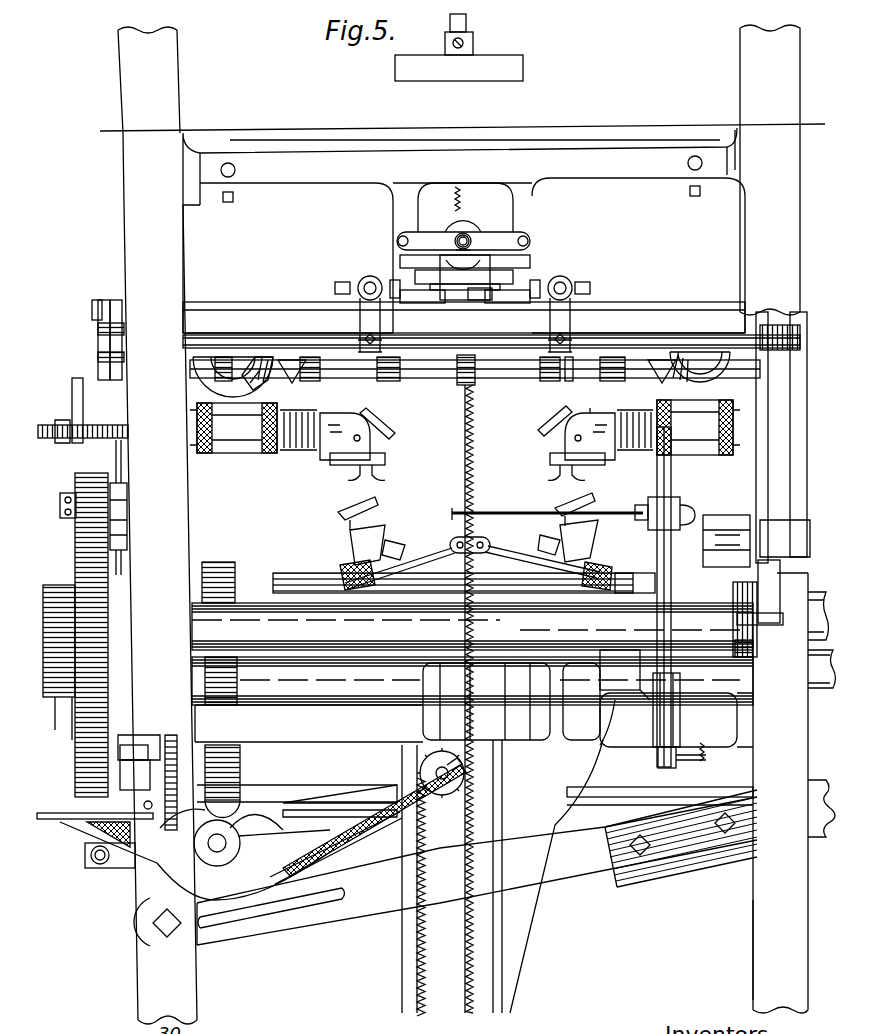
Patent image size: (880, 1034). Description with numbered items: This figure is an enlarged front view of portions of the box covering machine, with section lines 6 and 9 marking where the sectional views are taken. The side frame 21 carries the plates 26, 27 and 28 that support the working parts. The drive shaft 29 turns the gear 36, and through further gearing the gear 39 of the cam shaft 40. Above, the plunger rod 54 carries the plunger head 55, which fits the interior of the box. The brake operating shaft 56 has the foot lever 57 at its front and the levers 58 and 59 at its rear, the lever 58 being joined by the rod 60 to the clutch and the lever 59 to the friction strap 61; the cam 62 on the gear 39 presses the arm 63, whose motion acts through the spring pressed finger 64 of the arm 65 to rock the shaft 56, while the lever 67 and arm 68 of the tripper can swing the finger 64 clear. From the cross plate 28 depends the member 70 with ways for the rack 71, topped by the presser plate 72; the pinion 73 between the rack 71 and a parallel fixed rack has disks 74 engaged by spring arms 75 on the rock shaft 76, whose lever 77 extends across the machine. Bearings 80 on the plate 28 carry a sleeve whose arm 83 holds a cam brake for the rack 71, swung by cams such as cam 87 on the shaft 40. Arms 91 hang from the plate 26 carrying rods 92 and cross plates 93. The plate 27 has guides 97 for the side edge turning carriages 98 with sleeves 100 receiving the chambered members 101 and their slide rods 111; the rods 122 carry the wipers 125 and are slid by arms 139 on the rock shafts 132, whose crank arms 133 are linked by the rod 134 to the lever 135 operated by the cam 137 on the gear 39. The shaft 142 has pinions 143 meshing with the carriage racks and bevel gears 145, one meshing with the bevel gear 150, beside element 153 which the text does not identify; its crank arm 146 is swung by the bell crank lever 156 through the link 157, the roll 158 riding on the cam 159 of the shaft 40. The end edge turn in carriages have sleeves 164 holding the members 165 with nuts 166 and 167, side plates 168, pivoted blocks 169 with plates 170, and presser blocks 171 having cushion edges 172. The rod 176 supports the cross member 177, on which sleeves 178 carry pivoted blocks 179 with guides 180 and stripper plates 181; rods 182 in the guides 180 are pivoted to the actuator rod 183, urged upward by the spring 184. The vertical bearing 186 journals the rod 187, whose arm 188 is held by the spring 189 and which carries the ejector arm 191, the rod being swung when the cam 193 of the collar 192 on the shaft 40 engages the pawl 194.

The section line 6 is at (459, 126).
The section line 9 is at (455, 621).
The side frame 21 is at (753, 990).
The plate 26 is at (733, 165).
The plate 27 is at (708, 302).
The cross plate 28 is at (750, 723).
The drive shaft 29 is at (297, 710).
The gear 36 is at (237, 710).
The gear 39 is at (76, 476).
The cam shaft 40 is at (260, 605).
The plunger rod 54 is at (470, 26).
The plunger head 55 is at (497, 62).
The brake operating shaft 56 is at (214, 856).
The foot lever 57 is at (250, 862).
The lever 58 is at (235, 816).
The lever 59 is at (118, 870).
The rod 60 is at (290, 785).
The friction strap 61 is at (82, 802).
The cam 62 is at (140, 735).
The arm 63 is at (140, 780).
The spring pressed finger 64 is at (145, 796).
The arm 65 is at (160, 826).
The lever 67 is at (332, 802).
The arm 68 is at (370, 723).
The member 70 is at (528, 907).
The rack 71 is at (478, 470).
The presser plate 72 is at (525, 152).
The pinion 73 is at (498, 753).
The disks 74 is at (420, 772).
The spring arms 75 is at (358, 841).
The rock shaft 76 is at (162, 936).
The lever 77 is at (600, 862).
The bearings 80 is at (425, 715).
The arm 83 is at (440, 656).
The cam 87 is at (630, 690).
The arms 91 is at (393, 208).
The rods 92 is at (397, 246).
The cross plates 93 is at (480, 236).
The guides 97 is at (438, 310).
The edge turning carriage 98 is at (485, 298).
The sleeves 100 is at (455, 220).
The chambered members 101 is at (470, 215).
The slide rod 111 is at (472, 241).
The slidable rods 122 is at (357, 288).
The wipers 125 is at (396, 300).
The rock shafts 132 is at (262, 340).
The crank arms 133 is at (112, 302).
The rod 134 is at (92, 332).
The lever 135 is at (72, 405).
The cam 137 is at (128, 506).
The arms 139 is at (360, 312).
The shaft 142 is at (335, 375).
The pinion 143 is at (477, 380).
The bevel gears 145 is at (292, 386).
The crank arm 146 is at (795, 330).
The bevel gear 150 is at (210, 372).
The bevel gear 153 is at (718, 368).
The bell crank lever 156 is at (752, 520).
The link 157 is at (805, 384).
The roll 158 is at (750, 655).
The cam 159 is at (735, 602).
The sleeves 164 is at (245, 455).
The chambered members 165 is at (303, 452).
The nut 166 is at (367, 414).
The nut 167 is at (202, 456).
The side plates 168 is at (598, 410).
The pivoted blocks 169 is at (580, 386).
The plates 170 is at (385, 426).
The presser blocks 171 is at (378, 466).
The cushion edges 172 is at (385, 460).
The rod 176 is at (608, 560).
The cross member 177 is at (320, 576).
The sleeves 178 is at (348, 570).
The pivoted blocks 179 is at (385, 548).
The guides 180 is at (410, 560).
The stripper plates 181 is at (360, 510).
The rods 182 is at (638, 572).
The actuator rod 183 is at (484, 545).
The spring 184 is at (490, 556).
The vertical bearing 186 is at (680, 718).
The rod 187 is at (660, 768).
The arm 188 is at (688, 766).
The spring 189 is at (712, 755).
The ejector arm 191 is at (645, 512).
The collar 192 is at (668, 576).
The cam 193 is at (610, 735).
The pawl 194 is at (645, 705).